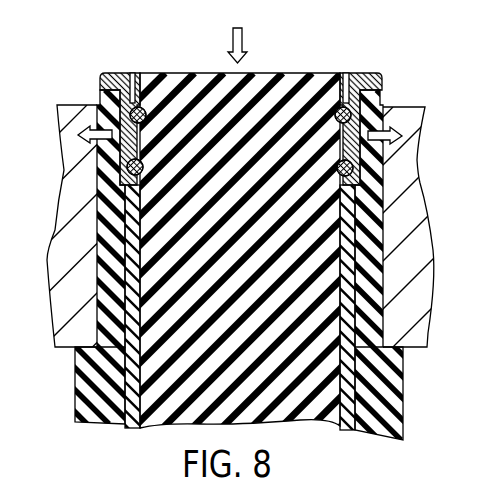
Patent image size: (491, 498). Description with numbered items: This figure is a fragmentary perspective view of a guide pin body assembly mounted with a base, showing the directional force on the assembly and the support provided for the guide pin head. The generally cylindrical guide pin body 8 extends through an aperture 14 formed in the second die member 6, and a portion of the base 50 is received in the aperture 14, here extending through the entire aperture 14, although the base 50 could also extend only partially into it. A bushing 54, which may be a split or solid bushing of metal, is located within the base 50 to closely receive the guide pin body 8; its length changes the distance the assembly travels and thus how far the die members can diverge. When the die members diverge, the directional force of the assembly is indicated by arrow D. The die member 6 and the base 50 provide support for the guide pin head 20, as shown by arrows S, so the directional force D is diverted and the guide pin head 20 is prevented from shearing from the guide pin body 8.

The guide pin body 8 is at (279, 67).
The guide pin head 20 is at (376, 67).
The second die member 6 is at (418, 160).
The aperture 14 is at (383, 223).
The base 50 is at (88, 378).
The bushing 54 is at (128, 426).
The arrows S is at (89, 123).
The directional force D is at (232, 37).